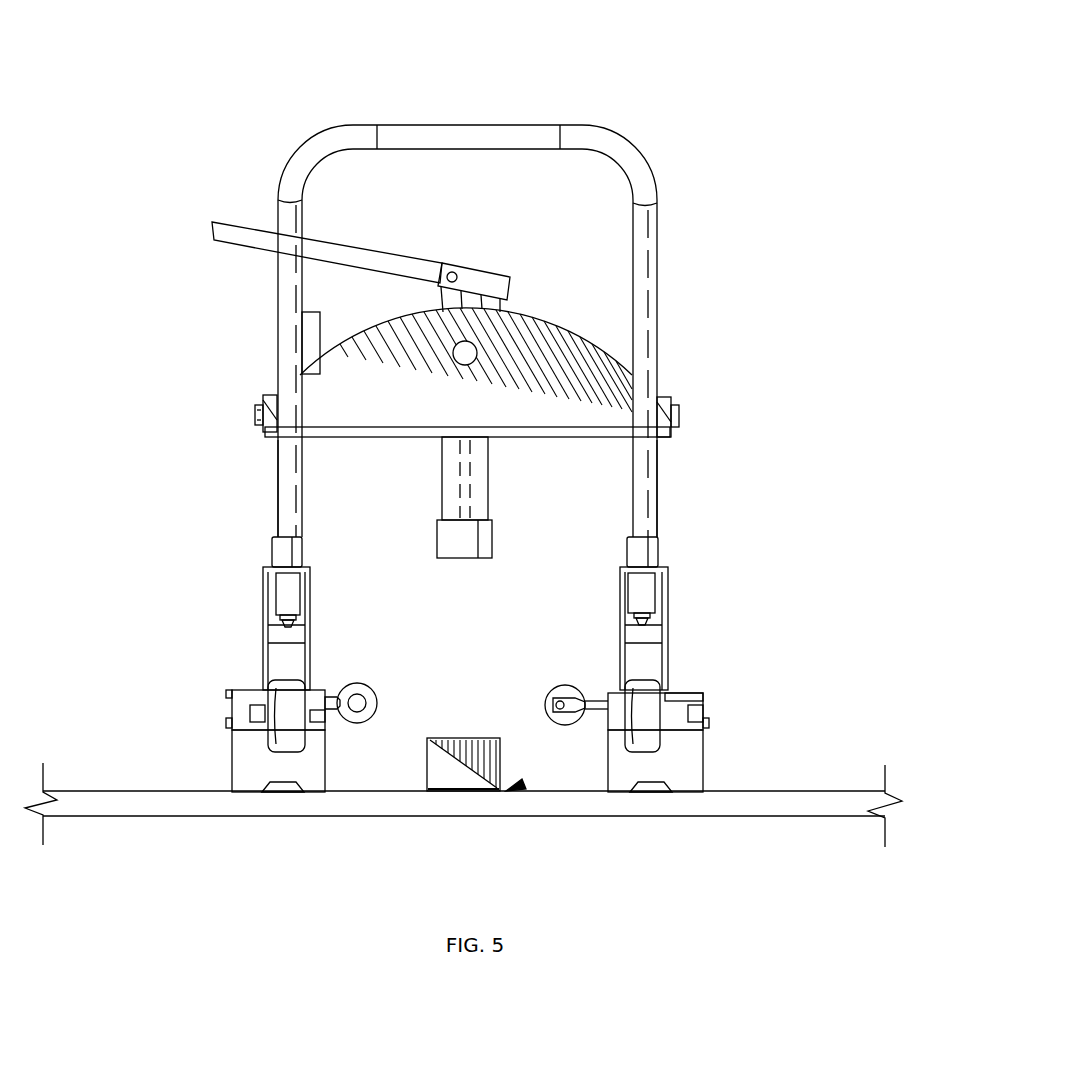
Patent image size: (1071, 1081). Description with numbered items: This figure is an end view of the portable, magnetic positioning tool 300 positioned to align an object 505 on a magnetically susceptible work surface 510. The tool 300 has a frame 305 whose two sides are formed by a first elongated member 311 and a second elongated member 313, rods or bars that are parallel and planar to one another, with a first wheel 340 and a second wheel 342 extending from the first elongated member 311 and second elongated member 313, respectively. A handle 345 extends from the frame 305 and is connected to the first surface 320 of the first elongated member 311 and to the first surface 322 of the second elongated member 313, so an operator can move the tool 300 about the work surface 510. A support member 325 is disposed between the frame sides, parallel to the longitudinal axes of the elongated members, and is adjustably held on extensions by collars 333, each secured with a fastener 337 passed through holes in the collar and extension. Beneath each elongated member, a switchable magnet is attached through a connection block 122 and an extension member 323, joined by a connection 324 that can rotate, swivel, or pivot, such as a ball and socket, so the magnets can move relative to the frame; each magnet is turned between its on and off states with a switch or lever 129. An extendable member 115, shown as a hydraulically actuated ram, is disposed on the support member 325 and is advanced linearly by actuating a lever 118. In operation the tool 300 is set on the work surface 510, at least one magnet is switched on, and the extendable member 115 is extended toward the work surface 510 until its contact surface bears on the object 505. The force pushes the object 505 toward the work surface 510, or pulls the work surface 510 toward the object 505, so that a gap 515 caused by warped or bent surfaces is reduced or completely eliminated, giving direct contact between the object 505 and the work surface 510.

The portable, magnetic positioning tool 300 is at (746, 96).
The handle 345 is at (472, 124).
The handle or lever 118 is at (243, 222).
The frame 305 is at (574, 330).
The collars 333 is at (270, 395).
The fastener 337 is at (255, 412).
The support member 325 is at (685, 430).
The first surface of the first elongated member 320 is at (285, 530).
The first surface of the second elongated member 322 is at (648, 530).
The first elongated member 311 is at (270, 543).
The second elongated member 313 is at (660, 545).
The extension member 323 is at (290, 590).
The connection 324 is at (262, 618).
The connection block 122 is at (275, 665).
The switch or lever 129 is at (352, 682).
The extendable member 115 is at (462, 560).
The object 505 is at (458, 738).
The gap 515 is at (520, 785).
The work surface 510 is at (805, 790).
The first wheel 340 is at (287, 740).
The second wheel 342 is at (648, 740).